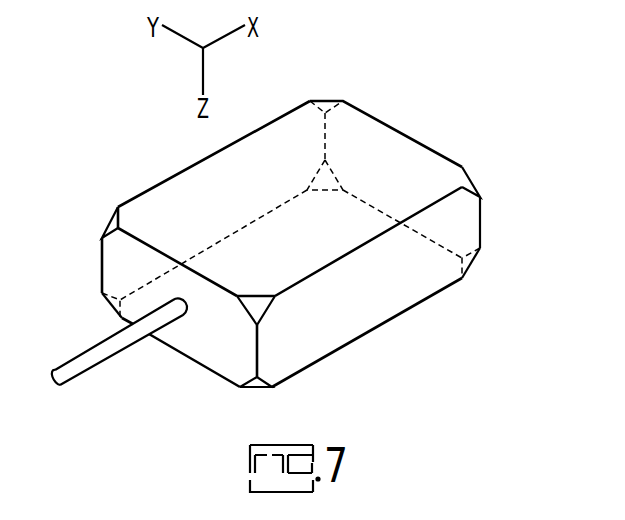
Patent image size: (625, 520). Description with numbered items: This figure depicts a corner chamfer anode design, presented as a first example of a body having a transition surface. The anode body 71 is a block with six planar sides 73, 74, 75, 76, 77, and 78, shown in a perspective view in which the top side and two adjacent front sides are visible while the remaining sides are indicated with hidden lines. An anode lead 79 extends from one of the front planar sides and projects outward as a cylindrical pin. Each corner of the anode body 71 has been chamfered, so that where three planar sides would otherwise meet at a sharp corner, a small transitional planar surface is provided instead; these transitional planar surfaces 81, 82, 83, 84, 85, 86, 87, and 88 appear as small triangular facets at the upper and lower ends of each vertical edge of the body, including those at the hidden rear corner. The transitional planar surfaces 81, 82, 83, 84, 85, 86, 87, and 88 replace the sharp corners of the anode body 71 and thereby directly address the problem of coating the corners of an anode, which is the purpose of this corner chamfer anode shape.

The anode body 71 is at (168, 143).
The planar side 73 is at (298, 255).
The planar side 74 is at (318, 328).
The planar side 75 is at (378, 290).
The planar side 76 is at (165, 218).
The planar side 77 is at (410, 137).
The planar side 78 is at (203, 337).
The anode lead 79 is at (102, 357).
The transitional planar surface 81 is at (250, 310).
The transitional planar surface 82 is at (260, 388).
The transitional planar surface 83 is at (475, 182).
The transitional planar surface 84 is at (477, 267).
The transitional planar surface 85 is at (318, 100).
The transitional planar surface 86 is at (333, 177).
The transitional planar surface 87 is at (108, 218).
The transitional planar surface 88 is at (113, 311).